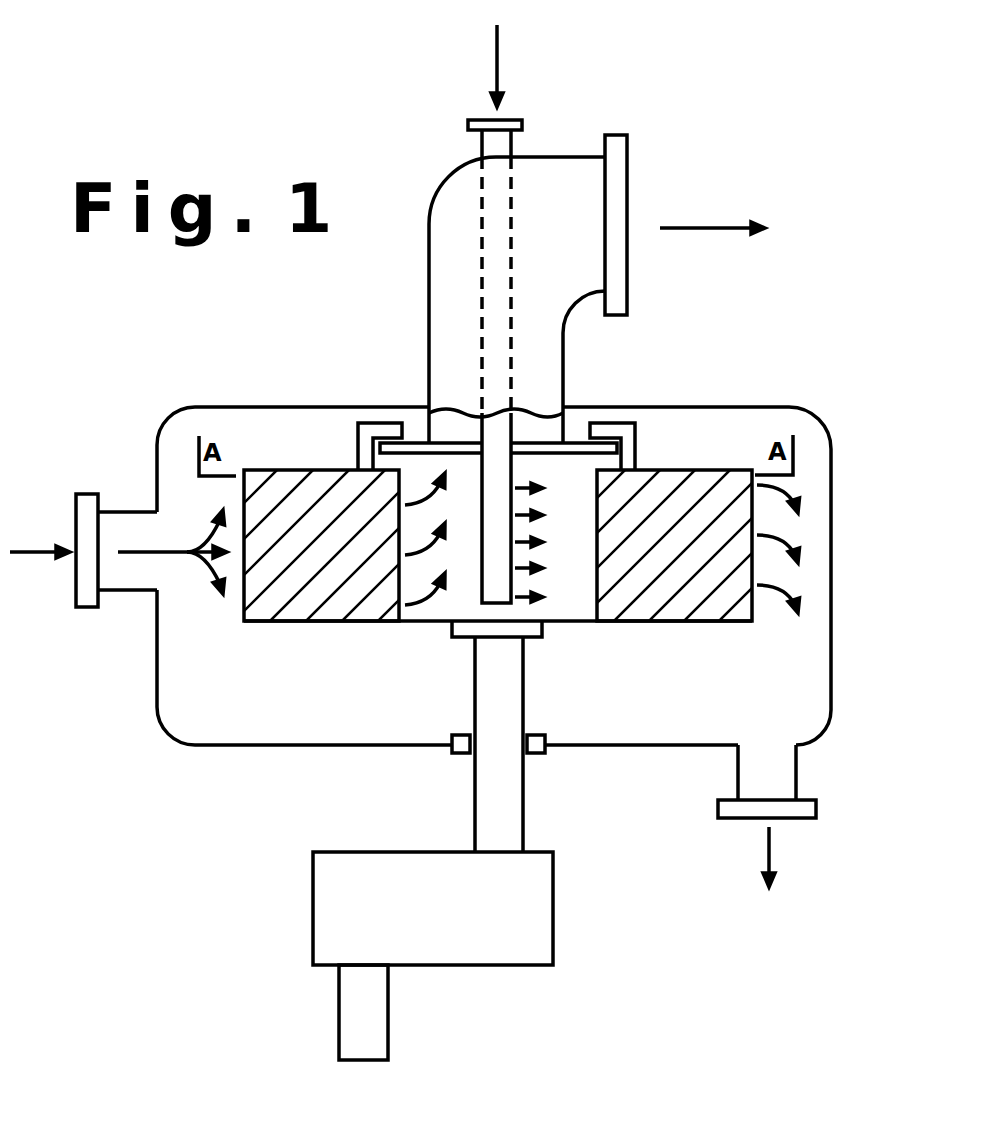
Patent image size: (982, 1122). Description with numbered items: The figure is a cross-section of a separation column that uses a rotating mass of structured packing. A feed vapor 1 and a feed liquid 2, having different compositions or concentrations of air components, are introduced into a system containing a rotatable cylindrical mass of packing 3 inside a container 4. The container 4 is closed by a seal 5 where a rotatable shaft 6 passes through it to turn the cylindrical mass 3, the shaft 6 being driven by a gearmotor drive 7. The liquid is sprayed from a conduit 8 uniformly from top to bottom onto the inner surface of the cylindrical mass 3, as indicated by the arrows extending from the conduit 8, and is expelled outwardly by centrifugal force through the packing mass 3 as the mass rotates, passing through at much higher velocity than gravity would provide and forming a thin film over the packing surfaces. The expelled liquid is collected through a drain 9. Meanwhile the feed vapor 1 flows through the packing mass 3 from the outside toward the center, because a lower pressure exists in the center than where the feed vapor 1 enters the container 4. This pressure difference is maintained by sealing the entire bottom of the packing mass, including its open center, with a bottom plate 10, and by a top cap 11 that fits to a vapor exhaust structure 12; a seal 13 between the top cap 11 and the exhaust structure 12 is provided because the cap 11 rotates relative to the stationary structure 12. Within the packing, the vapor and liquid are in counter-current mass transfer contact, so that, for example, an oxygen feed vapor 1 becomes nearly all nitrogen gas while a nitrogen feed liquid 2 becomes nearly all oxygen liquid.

The feed vapor 1 is at (50, 550).
The feed liquid 2 is at (497, 62).
The rotatable cylindrical mass of packing 3 is at (263, 621).
The container 4 is at (820, 733).
The seal 5 is at (533, 754).
The rotatable shaft 6 is at (490, 818).
The gearmotor drive 7 is at (428, 923).
The conduit 8 is at (502, 470).
The drain 9 is at (754, 777).
The bottom plate 10 is at (360, 621).
The top cap 11 is at (627, 422).
The vapor exhaust structure 12 is at (562, 308).
The seal 13 is at (417, 432).